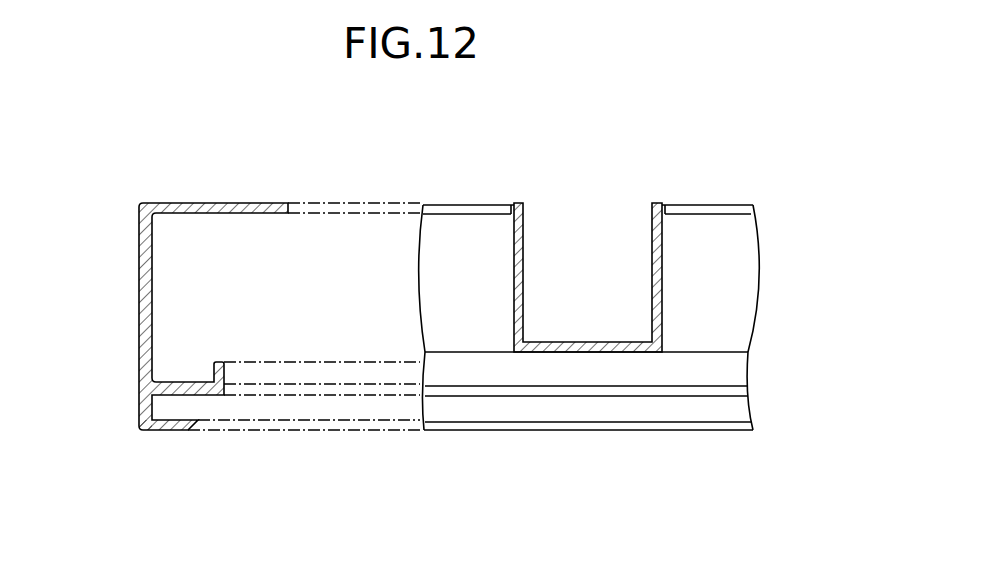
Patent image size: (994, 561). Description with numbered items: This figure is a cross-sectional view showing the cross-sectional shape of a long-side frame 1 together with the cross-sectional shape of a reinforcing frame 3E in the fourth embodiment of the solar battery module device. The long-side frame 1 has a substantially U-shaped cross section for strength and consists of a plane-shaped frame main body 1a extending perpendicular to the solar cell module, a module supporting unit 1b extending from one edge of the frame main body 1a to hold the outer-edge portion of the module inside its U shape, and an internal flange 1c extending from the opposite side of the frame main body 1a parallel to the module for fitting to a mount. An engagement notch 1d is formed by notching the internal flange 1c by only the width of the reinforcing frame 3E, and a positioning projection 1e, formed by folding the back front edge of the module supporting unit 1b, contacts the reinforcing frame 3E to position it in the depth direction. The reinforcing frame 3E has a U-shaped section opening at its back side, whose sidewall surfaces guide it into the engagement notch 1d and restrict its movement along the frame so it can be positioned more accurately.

The long-side frame 1 is at (139, 222).
The frame main body 1a is at (139, 313).
The module supporting unit 1b is at (150, 403).
The internal flange 1c is at (193, 203).
The engagement notch 1d is at (515, 203).
The positioning projection 1e is at (217, 360).
The reinforcing frame 3E is at (523, 225).